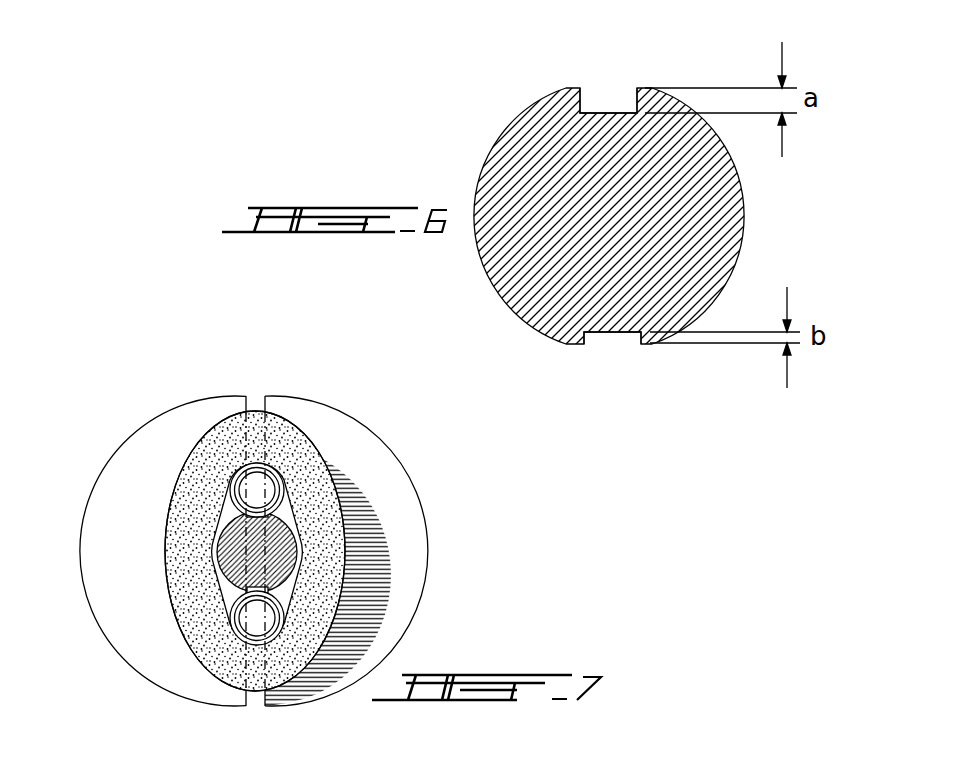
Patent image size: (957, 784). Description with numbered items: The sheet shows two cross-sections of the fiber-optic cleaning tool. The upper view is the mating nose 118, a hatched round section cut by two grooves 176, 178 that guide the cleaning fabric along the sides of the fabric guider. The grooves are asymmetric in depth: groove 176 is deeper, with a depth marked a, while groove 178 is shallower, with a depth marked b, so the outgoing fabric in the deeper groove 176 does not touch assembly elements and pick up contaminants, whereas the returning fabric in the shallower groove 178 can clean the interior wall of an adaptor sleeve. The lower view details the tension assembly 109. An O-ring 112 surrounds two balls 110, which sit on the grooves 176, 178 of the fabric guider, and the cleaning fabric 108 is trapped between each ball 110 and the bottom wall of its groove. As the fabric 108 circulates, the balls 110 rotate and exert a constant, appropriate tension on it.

In FIG. 7, the tension assembly 109 is at (293, 390).
In FIG. 7, the O-ring 112 is at (207, 453).
In FIG. 7, the ball 110 is at (257, 490).
In FIG. 7, the cleaning fabric 108 is at (268, 515).
In FIG. 6, the nose 118 is at (542, 252).
In FIG. 7, the nose 118 is at (278, 552).
In FIG. 6, the groove 176 is at (604, 97).
In FIG. 6, the groove 178 is at (603, 340).